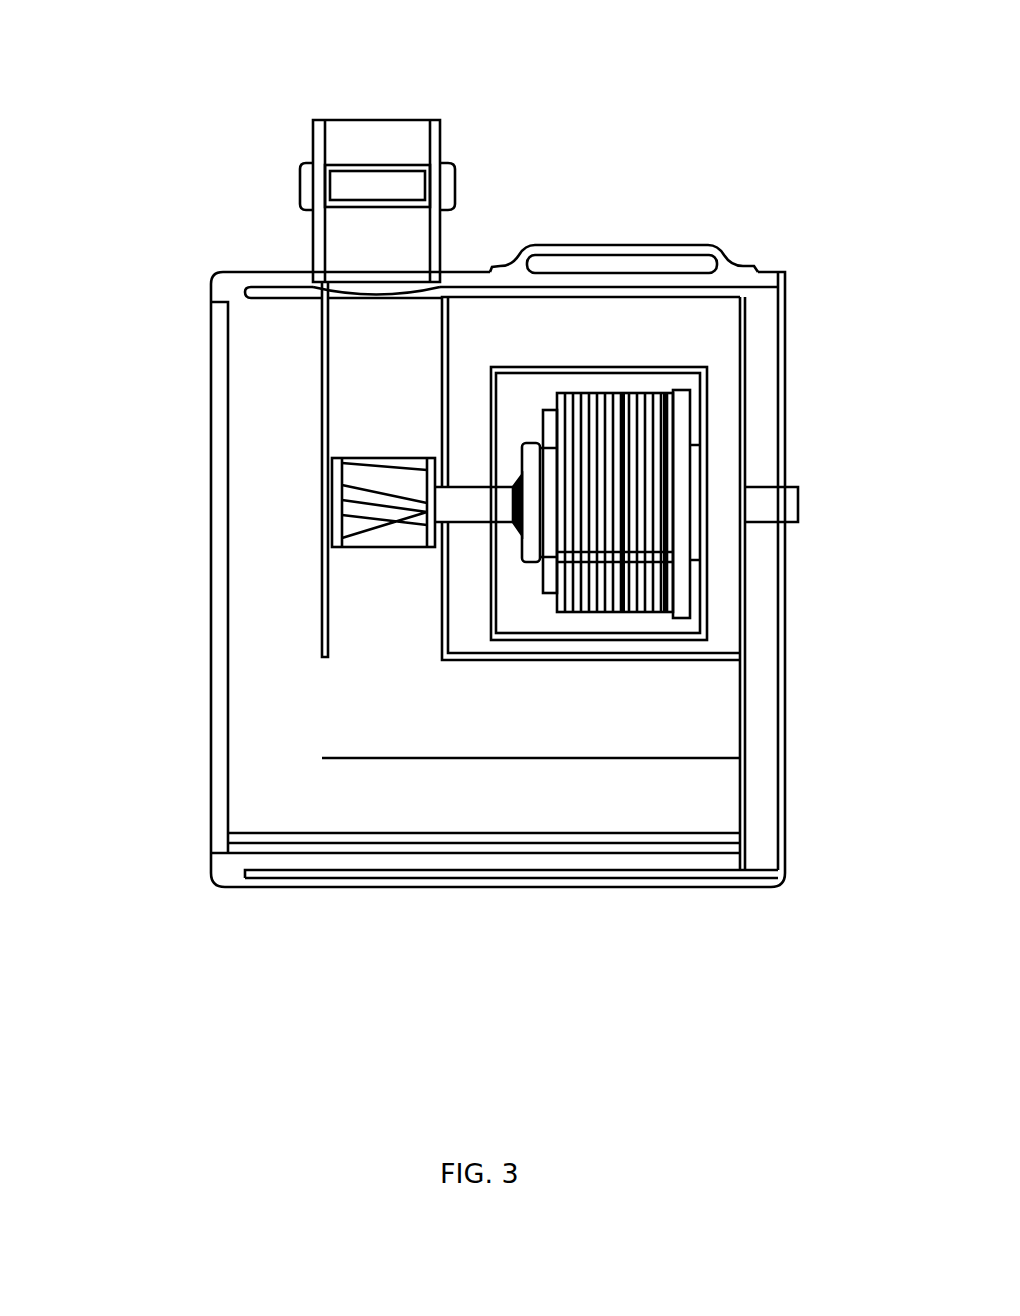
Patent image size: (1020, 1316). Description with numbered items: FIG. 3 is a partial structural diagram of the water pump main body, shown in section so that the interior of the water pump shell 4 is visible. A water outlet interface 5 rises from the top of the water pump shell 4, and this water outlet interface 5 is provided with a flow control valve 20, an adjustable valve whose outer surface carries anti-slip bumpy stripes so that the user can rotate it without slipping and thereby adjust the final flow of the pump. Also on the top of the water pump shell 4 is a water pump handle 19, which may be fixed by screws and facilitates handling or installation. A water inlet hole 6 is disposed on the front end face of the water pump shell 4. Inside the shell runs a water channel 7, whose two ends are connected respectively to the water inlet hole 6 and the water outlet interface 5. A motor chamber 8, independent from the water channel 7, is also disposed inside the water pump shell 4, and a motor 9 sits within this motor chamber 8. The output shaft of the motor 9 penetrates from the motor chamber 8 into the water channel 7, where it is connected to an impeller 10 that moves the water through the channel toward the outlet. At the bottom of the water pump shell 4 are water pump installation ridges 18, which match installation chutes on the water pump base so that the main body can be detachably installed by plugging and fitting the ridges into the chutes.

The water pump shell 4 is at (215, 675).
The water outlet interface 5 is at (382, 148).
The water inlet hole 6 is at (745, 715).
The water channel 7 is at (347, 698).
The motor chamber 8 is at (515, 610).
The motor 9 is at (612, 608).
The impeller 10 is at (340, 500).
The water pump installation ridges 18 is at (673, 887).
The water pump handle 19 is at (617, 245).
The flow control valve 20 is at (305, 178).